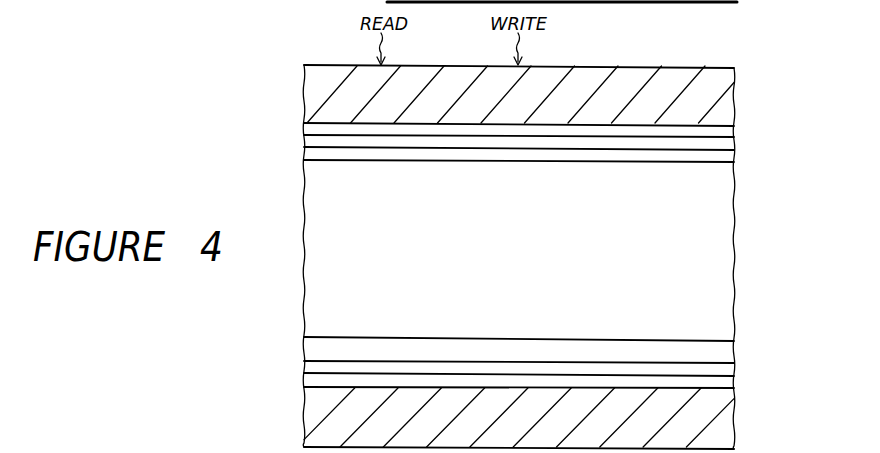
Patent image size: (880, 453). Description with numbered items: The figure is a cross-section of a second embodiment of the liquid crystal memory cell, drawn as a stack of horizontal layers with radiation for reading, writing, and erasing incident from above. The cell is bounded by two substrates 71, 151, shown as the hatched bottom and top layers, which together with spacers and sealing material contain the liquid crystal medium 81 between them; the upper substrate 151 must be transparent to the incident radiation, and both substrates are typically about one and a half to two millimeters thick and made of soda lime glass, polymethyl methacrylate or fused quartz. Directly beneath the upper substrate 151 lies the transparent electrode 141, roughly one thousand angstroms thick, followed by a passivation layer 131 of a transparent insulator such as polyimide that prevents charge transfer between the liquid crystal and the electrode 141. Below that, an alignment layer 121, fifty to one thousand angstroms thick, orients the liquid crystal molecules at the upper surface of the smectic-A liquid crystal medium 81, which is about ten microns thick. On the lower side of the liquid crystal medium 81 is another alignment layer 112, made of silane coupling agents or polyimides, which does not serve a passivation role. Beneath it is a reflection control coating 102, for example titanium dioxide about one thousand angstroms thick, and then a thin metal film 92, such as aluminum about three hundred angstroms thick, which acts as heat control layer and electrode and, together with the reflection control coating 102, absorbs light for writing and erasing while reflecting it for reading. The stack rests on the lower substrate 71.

The substrate 151 is at (736, 92).
The transparent electrode 141 is at (736, 126).
The passivation layer 131 is at (736, 148).
The alignment layer 121 is at (737, 160).
The liquid crystal medium 81 is at (734, 258).
The alignment layer 112 is at (733, 343).
The reflection control coating 102 is at (735, 363).
The heat control layer 92 is at (737, 386).
The substrate 71 is at (737, 425).